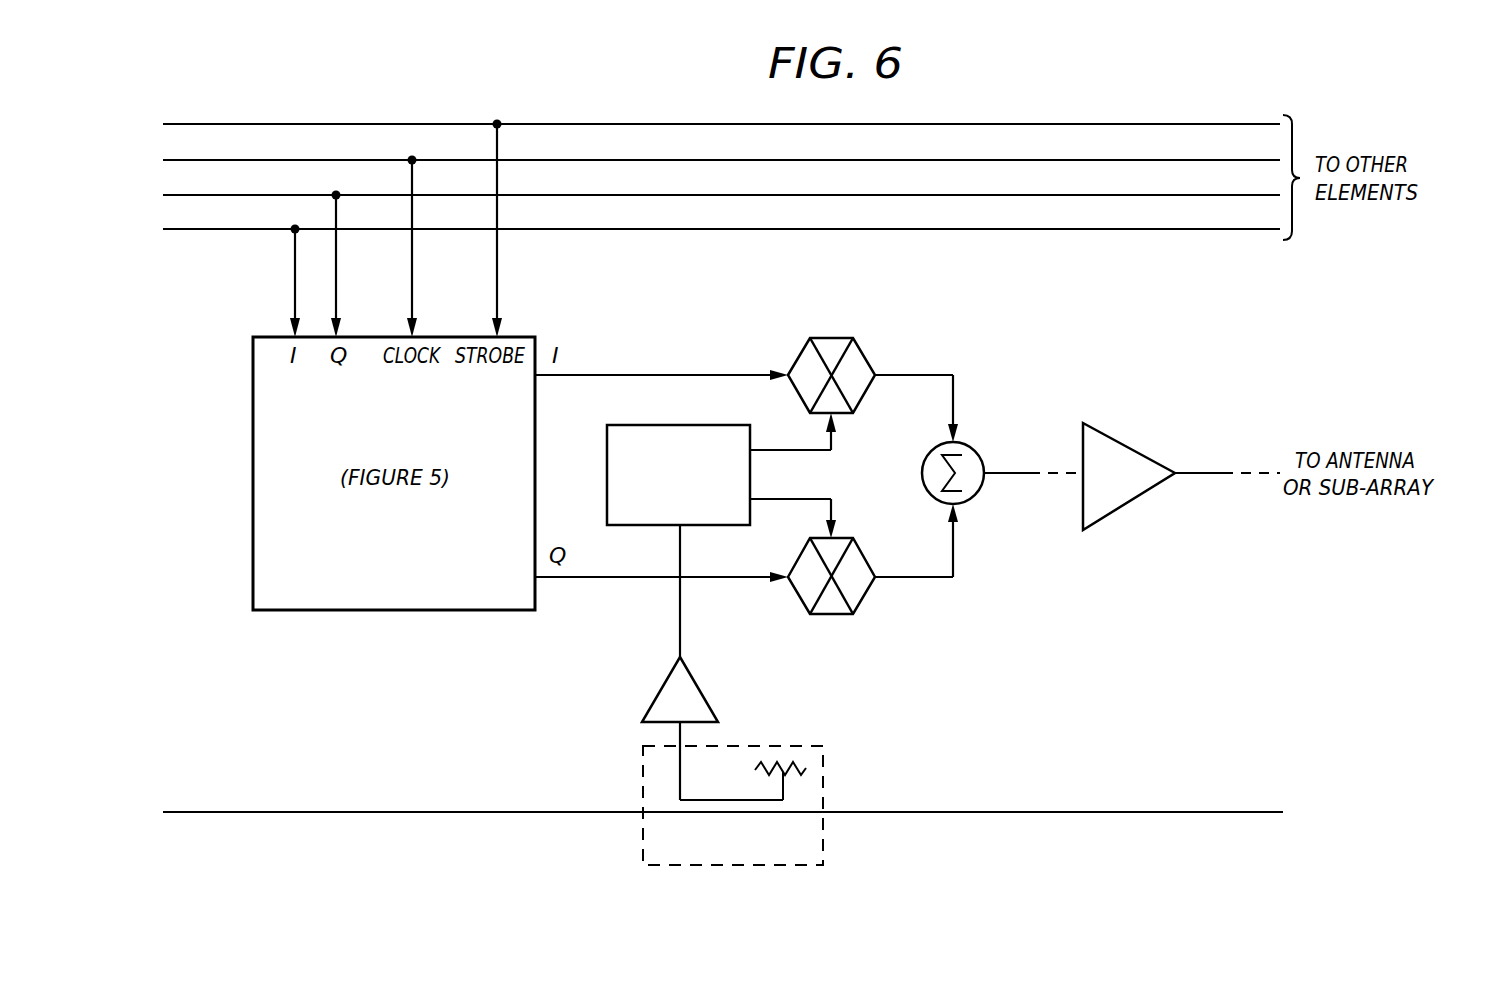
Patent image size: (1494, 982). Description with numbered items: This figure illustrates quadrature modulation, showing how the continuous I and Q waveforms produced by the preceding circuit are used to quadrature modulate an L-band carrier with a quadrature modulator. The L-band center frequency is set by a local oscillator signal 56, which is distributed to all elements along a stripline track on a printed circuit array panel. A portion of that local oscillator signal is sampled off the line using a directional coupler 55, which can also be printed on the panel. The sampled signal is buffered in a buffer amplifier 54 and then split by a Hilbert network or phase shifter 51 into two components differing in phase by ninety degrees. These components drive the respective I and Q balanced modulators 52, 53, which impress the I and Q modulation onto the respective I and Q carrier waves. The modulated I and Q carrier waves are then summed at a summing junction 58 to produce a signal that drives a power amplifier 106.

The phase shifter 51 is at (607, 477).
The I mixer 52 is at (835, 333).
The Q mixer 53 is at (832, 617).
The buffer amplifier 54 is at (660, 690).
The directional coupler 55 is at (826, 788).
The local oscillator signal 56 is at (170, 815).
The summing junction 58 is at (922, 477).
The power amplifier 106 is at (1126, 513).